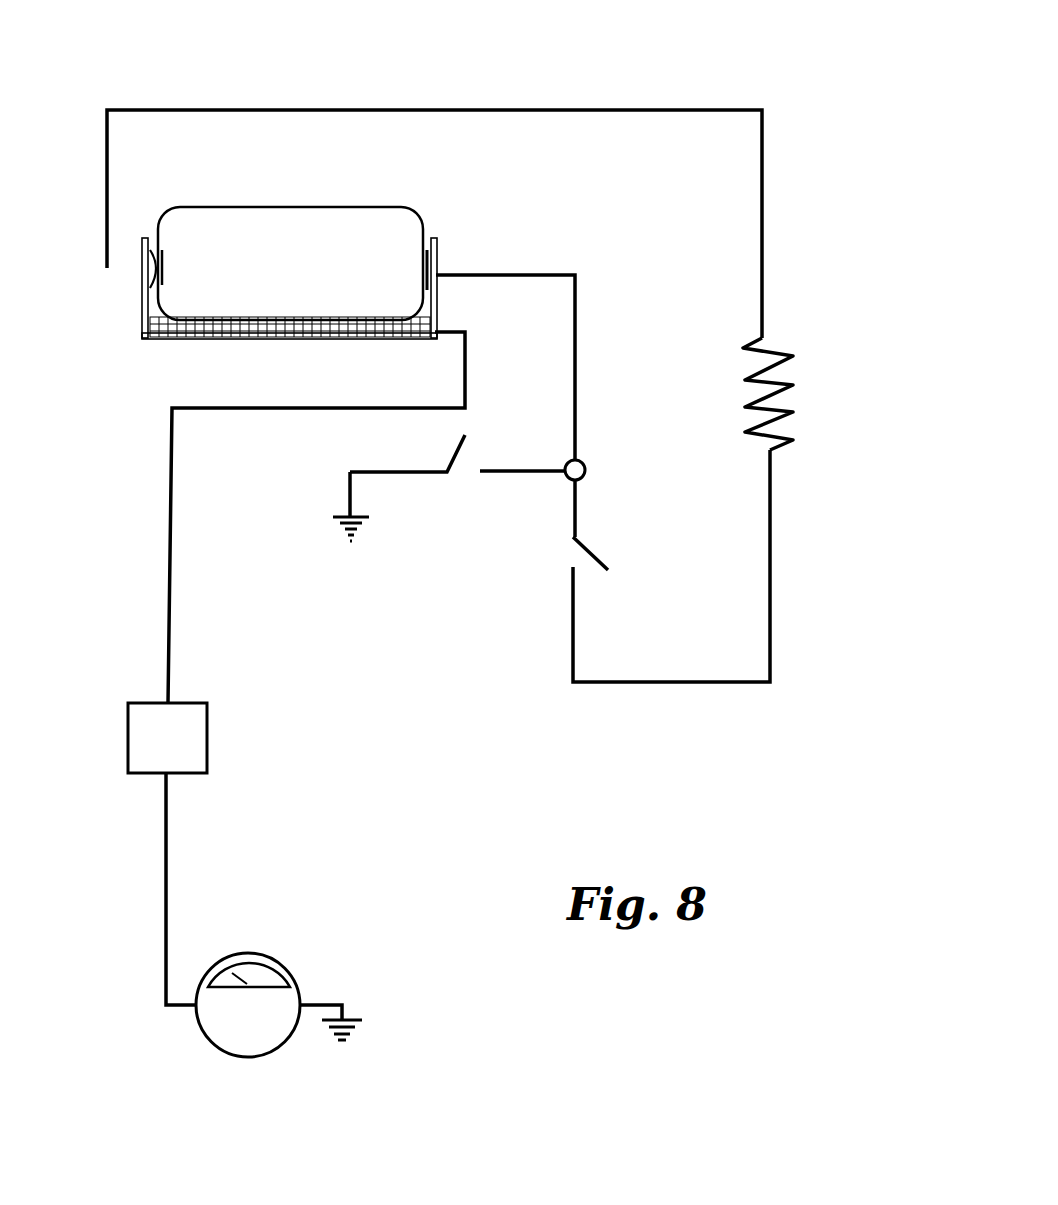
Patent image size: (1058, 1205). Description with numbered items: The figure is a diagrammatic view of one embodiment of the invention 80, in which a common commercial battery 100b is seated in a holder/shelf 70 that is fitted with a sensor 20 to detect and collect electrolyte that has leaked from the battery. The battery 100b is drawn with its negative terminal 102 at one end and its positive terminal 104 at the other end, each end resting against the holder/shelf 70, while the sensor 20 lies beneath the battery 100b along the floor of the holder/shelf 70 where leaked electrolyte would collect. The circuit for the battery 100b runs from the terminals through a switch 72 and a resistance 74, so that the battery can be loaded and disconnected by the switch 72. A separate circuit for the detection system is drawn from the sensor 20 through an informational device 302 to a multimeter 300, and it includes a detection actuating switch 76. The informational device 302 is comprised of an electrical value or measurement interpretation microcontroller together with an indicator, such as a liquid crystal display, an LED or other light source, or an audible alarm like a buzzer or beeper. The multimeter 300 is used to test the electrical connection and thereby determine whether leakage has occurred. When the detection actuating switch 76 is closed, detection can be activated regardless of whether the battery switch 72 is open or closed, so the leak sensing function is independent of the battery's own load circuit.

The embodiment of the invention 80 is at (678, 82).
The common commercial battery 100b is at (303, 273).
The holder/shelf 70 is at (438, 248).
The sensor 20 is at (181, 325).
The negative terminal 102 is at (163, 258).
The positive terminal 104 is at (421, 245).
The resistance 74 is at (790, 385).
The switch 72 is at (598, 550).
The detection actuating switch 76 is at (455, 448).
The informational device 302 is at (207, 737).
The multimeter 300 is at (296, 973).